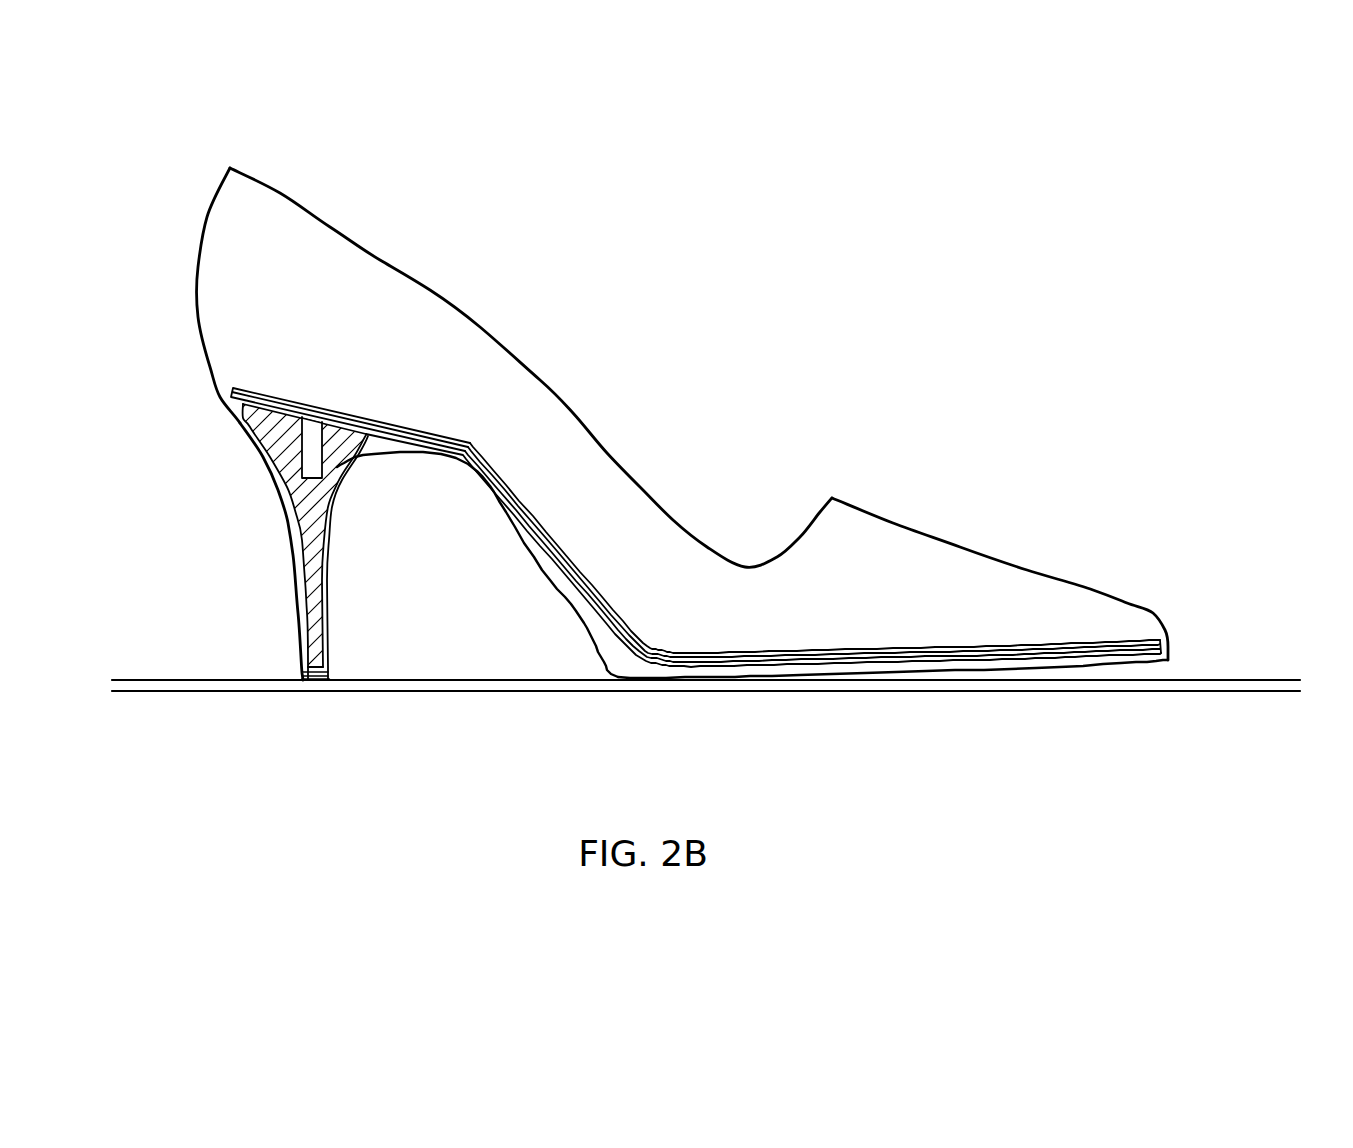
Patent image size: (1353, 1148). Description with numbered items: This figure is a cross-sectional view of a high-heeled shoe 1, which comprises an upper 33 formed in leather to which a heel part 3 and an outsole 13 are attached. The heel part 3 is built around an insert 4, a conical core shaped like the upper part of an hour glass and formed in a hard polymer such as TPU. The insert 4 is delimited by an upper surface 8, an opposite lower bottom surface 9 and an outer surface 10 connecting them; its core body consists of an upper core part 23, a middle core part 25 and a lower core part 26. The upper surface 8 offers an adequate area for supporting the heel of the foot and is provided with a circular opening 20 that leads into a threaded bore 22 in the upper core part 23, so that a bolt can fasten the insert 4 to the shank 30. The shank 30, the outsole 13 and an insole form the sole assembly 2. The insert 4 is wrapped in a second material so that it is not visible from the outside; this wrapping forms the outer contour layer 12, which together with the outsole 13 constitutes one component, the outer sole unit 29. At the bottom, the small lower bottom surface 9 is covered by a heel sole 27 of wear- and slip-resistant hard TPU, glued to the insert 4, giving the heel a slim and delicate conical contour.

The high-heeled shoe 1 is at (900, 275).
The sole assembly 2 is at (313, 560).
The heel part 3 is at (270, 487).
The insert 4 is at (333, 440).
The upper surface 8 is at (268, 410).
The lower bottom surface 9 is at (307, 680).
The outer surface 10 is at (313, 638).
The outer contour layer 12 is at (337, 493).
The outsole 13 is at (717, 679).
The circular opening 20 is at (317, 427).
The threaded bore 22 is at (305, 423).
The upper core part 23 is at (268, 437).
The middle core part 25 is at (290, 560).
The lower core part 26 is at (307, 667).
The heel sole 27 is at (330, 672).
The outer sole unit 29 is at (355, 462).
The shank 30 is at (532, 507).
The upper 33 is at (885, 537).